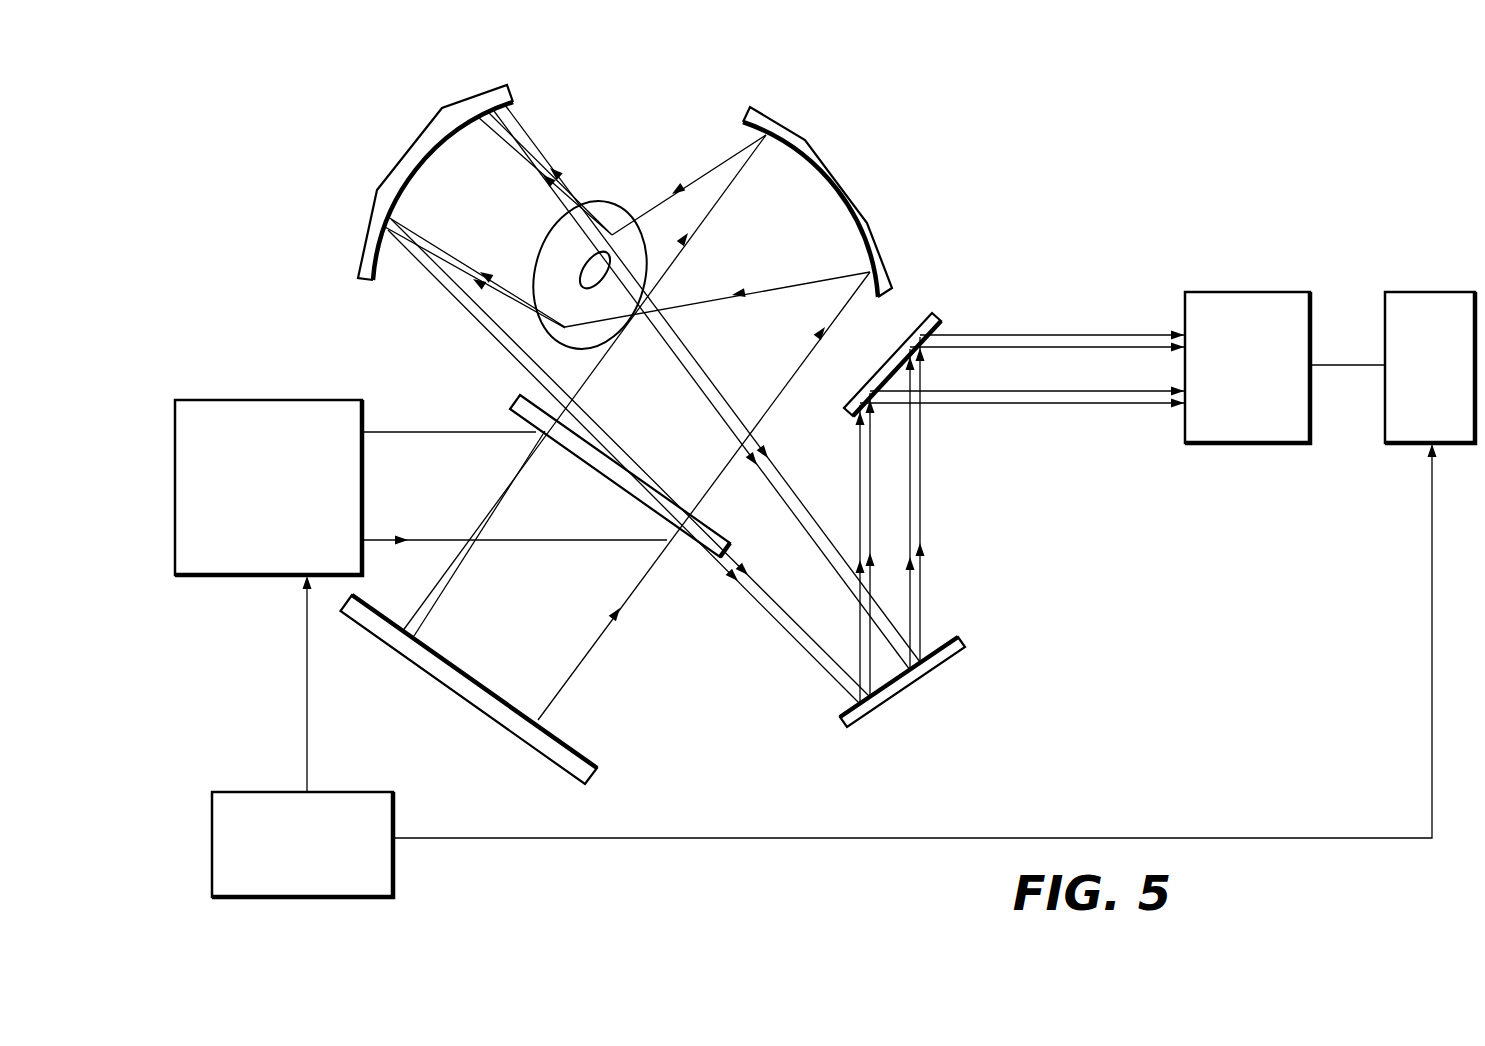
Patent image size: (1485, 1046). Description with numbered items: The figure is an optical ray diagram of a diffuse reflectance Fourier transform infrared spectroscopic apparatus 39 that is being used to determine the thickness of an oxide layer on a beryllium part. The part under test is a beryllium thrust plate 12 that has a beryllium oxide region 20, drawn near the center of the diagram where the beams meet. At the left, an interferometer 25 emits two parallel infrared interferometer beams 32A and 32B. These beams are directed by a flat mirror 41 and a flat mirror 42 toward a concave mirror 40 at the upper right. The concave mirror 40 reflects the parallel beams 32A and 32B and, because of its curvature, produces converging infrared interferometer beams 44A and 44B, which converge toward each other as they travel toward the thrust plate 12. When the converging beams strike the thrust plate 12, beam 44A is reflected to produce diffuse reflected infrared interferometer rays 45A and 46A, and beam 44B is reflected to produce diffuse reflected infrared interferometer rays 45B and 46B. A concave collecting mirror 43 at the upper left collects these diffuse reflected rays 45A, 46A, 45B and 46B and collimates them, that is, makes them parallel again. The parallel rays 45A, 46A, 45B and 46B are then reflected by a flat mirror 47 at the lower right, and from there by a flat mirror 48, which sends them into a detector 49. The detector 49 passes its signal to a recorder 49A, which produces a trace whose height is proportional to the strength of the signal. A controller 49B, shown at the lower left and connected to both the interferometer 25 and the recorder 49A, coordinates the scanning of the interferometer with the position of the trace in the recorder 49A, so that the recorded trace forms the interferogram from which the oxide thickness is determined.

The beryllium thrust plate 12 is at (645, 250).
The beryllium oxide region 20 is at (615, 207).
The interferometer 25 is at (222, 580).
The infrared interferometer beam 32A is at (835, 360).
The infrared interferometer beam 32B is at (388, 430).
The diffuse reflectance Fourier transform infrared spectroscopic apparatus 39 is at (723, 854).
The concave mirror 40 is at (877, 237).
The flat mirror 41 is at (694, 545).
The flat mirror 42 is at (497, 723).
The second curved mirror 43 is at (407, 155).
The converging infrared interferometer beam 44A is at (803, 284).
The converging infrared interferometer beam 44B is at (700, 172).
The diffuse reflected infrared interferometer ray 45A is at (767, 608).
The diffuse reflected infrared interferometer ray 45B is at (669, 340).
The diffuse reflected infrared interferometer ray 46A is at (767, 590).
The diffuse reflected infrared interferometer ray 46B is at (668, 337).
The flat mirror 47 is at (883, 705).
The flat mirror 48 is at (918, 312).
The detector 49 is at (1222, 292).
The recorder 49A is at (1398, 292).
The controller 49B is at (343, 790).